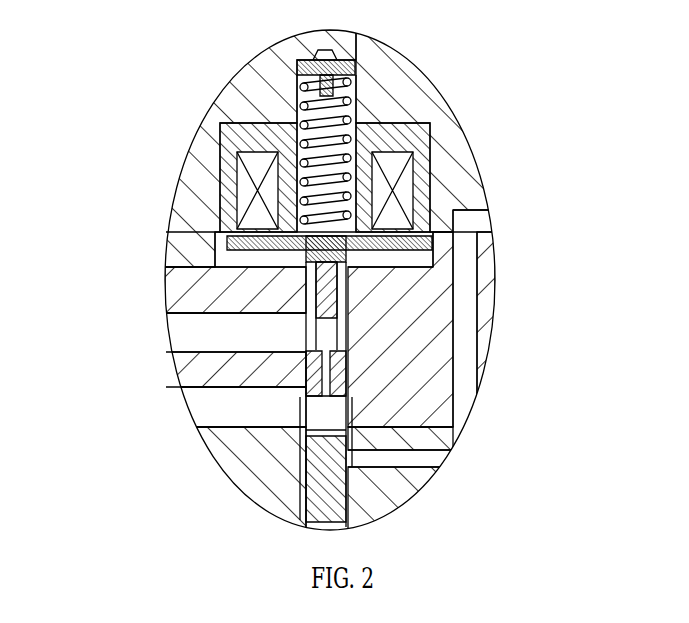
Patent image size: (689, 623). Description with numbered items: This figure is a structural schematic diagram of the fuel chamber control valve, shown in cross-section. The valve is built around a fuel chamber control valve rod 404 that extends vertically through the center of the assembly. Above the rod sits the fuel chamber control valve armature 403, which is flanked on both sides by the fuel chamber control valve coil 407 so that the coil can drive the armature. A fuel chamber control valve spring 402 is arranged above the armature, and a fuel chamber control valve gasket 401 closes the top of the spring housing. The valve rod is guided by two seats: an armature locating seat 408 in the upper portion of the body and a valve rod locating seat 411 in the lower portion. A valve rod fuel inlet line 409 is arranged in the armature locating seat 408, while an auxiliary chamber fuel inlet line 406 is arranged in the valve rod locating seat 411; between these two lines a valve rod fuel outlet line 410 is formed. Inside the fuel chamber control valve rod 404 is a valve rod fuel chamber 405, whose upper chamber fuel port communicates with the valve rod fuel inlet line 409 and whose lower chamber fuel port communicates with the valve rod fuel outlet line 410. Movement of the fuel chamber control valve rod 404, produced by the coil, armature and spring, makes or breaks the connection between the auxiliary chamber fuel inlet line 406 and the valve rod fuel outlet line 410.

The fuel chamber control valve gasket 401 is at (338, 63).
The fuel chamber control valve spring 402 is at (413, 177).
The fuel chamber control valve armature 403 is at (432, 233).
The fuel chamber control valve rod 404 is at (350, 296).
The valve rod fuel chamber 405 is at (323, 371).
The auxiliary chamber fuel inlet line 406 is at (398, 458).
The fuel chamber control valve coil 407 is at (262, 186).
The armature locating seat 408 is at (203, 279).
The valve rod fuel inlet line 409 is at (227, 340).
The valve rod fuel outlet line 410 is at (232, 408).
The valve rod locating seat 411 is at (262, 480).